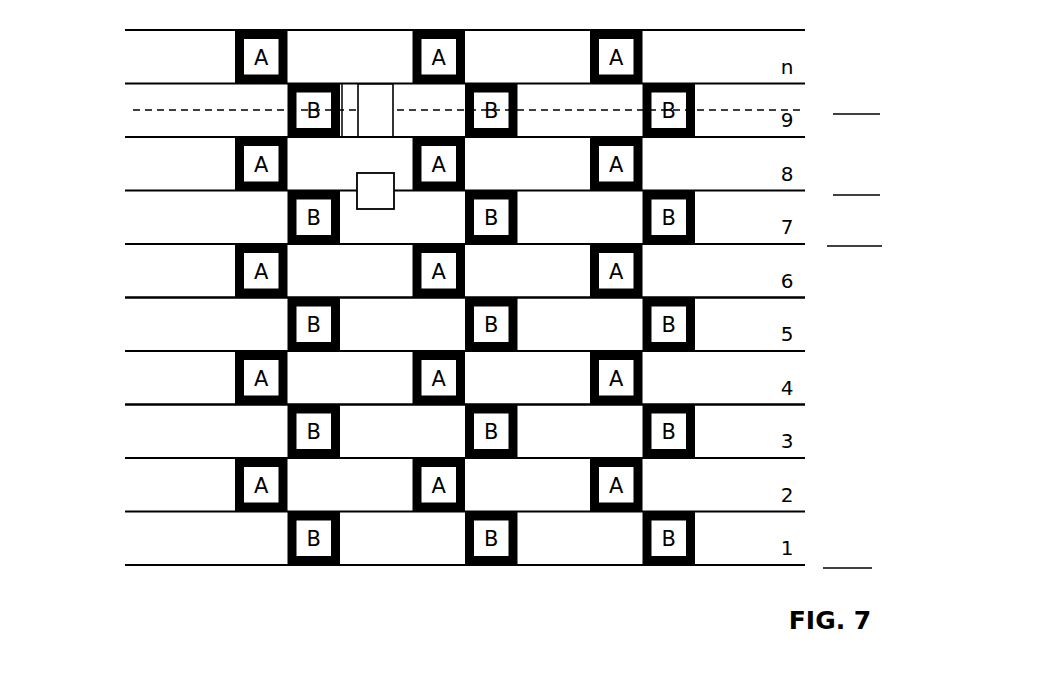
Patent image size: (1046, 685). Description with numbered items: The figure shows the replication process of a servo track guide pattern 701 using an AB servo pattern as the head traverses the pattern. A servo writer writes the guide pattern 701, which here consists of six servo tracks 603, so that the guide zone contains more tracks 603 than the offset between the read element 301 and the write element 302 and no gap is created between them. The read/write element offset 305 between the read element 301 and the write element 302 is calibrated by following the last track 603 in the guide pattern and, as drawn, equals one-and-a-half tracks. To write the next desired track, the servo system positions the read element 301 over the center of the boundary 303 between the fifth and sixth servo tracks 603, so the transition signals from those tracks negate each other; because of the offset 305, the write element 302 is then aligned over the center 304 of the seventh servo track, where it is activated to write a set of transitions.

The read element 301 is at (367, 200).
The write element 302 is at (386, 83).
The boundary 303 is at (124, 396).
The center of servo track 304 is at (121, 110).
The read/write element offset 305 is at (857, 121).
The servo tracks 603 is at (122, 160).
The servo track guide pattern 701 is at (849, 255).